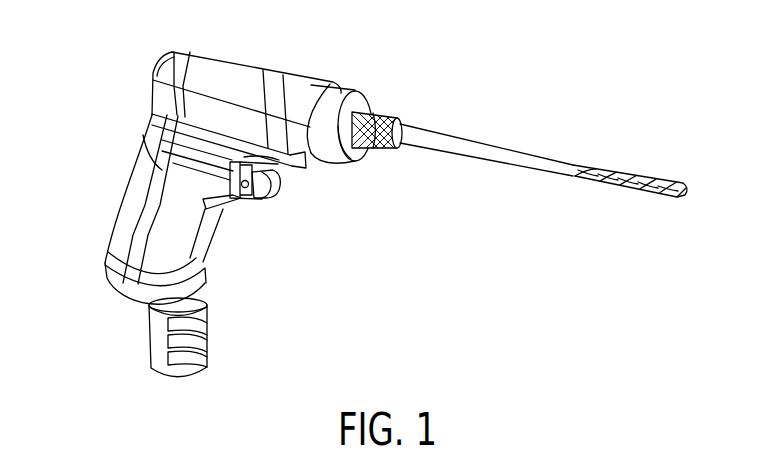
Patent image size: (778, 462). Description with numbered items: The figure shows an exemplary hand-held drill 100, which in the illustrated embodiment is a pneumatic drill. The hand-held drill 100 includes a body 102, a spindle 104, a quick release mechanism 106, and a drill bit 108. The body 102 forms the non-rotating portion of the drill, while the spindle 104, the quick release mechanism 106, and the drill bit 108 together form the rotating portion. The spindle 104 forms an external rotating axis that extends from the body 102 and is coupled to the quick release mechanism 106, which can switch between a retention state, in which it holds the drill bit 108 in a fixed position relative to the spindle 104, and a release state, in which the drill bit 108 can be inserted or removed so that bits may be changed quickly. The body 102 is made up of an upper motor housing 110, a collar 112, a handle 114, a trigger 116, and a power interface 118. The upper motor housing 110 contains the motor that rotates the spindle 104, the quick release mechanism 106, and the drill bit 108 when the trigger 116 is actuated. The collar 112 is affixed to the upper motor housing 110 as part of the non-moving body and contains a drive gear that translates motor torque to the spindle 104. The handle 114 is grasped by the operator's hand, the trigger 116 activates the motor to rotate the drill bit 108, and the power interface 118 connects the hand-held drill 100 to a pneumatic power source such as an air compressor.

The hand-held drill 100 is at (93, 29).
The body 102 is at (135, 104).
The spindle 104 is at (362, 97).
The quick release mechanism 106 is at (390, 113).
The drill bit 108 is at (490, 147).
The upper motor housing 110 is at (236, 61).
The collar 112 is at (344, 164).
The handle 114 is at (130, 183).
The trigger 116 is at (260, 201).
The power interface 118 is at (127, 303).